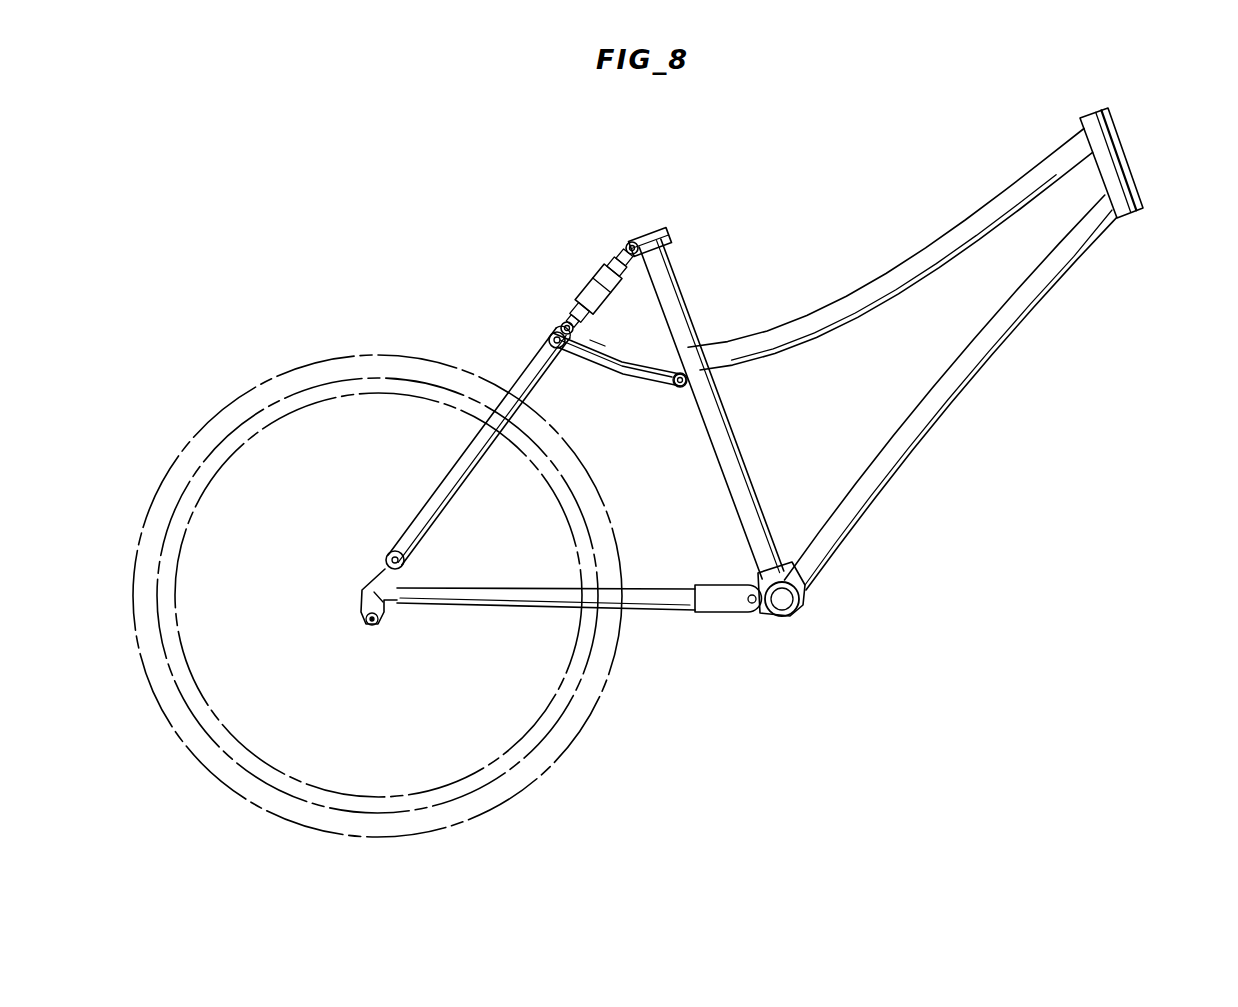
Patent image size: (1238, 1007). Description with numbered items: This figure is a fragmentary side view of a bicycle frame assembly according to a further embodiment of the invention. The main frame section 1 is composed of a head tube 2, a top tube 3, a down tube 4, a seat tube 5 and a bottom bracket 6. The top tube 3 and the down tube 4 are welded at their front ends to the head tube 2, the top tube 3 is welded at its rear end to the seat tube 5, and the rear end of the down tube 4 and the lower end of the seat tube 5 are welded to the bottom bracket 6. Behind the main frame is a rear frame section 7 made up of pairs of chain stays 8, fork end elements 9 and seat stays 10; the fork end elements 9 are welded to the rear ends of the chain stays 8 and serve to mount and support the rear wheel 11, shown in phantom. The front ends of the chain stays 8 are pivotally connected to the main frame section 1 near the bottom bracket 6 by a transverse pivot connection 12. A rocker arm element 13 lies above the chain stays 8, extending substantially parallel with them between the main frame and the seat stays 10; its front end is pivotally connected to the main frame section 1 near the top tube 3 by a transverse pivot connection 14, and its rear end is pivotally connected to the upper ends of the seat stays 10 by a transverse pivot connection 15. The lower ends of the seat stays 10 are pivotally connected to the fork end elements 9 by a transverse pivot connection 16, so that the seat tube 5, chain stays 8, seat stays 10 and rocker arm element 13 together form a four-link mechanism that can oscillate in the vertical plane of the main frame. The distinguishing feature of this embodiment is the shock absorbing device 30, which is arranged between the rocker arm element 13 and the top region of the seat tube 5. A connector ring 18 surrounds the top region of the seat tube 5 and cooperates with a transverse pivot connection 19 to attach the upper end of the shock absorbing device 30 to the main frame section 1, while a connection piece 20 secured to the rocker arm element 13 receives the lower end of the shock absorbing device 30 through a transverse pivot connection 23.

The main frame section 1 is at (923, 228).
The head tube 2 is at (1135, 165).
The top tube 3 is at (892, 278).
The down tube 4 is at (930, 442).
The seat tube 5 is at (745, 455).
The bottom bracket 6 is at (805, 605).
The rear frame section 7 is at (668, 618).
The chain stays 8 is at (653, 590).
The fork end elements 9 is at (386, 600).
The seat stays 10 is at (430, 497).
The rear wheel 11 is at (280, 375).
The transverse pivot connection 12 is at (752, 606).
The rocker arm element 13 is at (620, 372).
The transverse pivot connection 14 is at (678, 387).
The transverse pivot connection 15 is at (558, 348).
The transverse pivot connection 16 is at (392, 560).
The connector ring 18 is at (668, 240).
The transverse pivot connection 19 is at (630, 244).
The connection piece 20 is at (598, 343).
The transverse pivot connection 23 is at (563, 322).
The shock absorbing device 30 is at (612, 262).